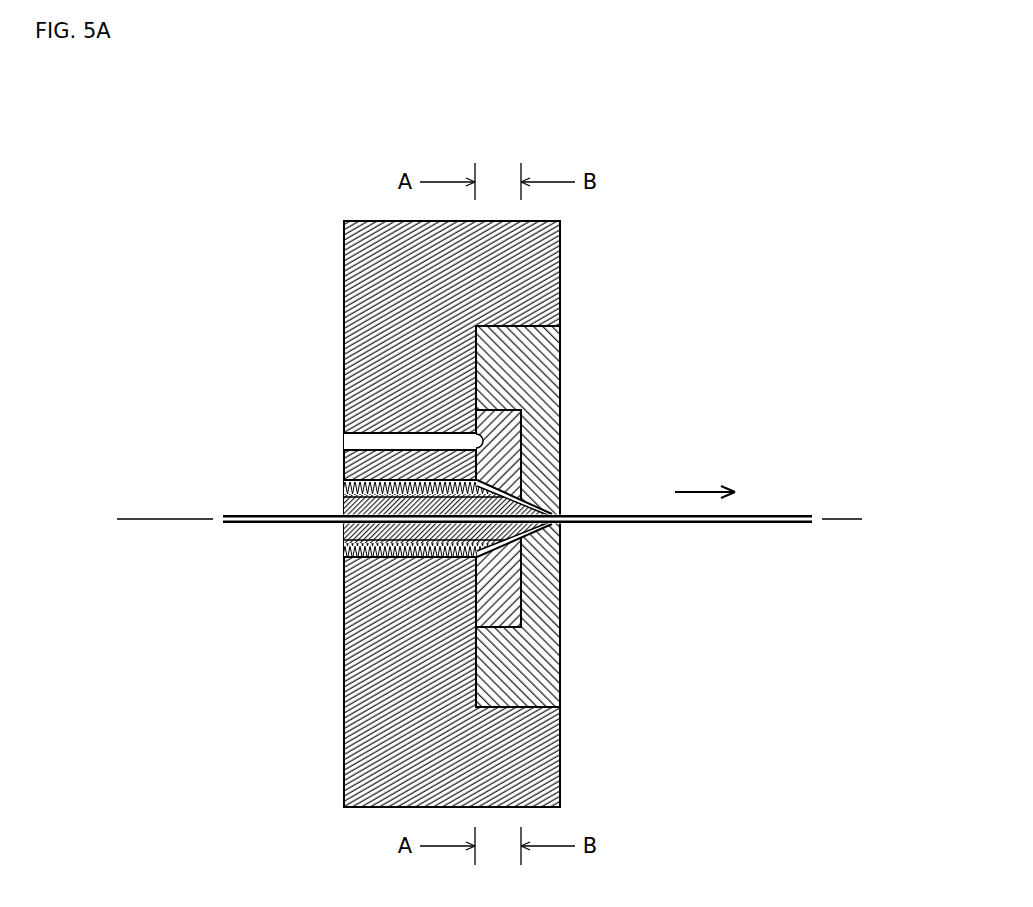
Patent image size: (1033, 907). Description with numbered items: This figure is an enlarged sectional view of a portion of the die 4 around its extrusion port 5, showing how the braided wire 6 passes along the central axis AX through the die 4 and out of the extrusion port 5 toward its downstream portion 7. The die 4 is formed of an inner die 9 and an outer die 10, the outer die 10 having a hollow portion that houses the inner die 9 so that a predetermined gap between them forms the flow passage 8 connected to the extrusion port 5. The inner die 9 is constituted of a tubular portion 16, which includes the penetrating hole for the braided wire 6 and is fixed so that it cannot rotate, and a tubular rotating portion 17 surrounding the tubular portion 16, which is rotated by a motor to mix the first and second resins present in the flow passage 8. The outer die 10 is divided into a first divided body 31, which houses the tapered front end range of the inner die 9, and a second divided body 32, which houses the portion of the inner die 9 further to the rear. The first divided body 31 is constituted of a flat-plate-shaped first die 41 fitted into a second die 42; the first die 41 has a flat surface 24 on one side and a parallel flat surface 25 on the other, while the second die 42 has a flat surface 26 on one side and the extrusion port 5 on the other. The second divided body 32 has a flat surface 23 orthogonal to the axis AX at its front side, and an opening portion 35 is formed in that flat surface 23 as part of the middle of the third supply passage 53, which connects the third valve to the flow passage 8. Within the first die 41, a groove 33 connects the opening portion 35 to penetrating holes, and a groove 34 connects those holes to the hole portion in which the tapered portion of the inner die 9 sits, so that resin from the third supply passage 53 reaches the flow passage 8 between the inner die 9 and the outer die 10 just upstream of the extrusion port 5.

The die 4 is at (305, 203).
The extrusion port 5 is at (565, 510).
The braided wire 6 is at (238, 515).
The second end portion of optical fiber 7 is at (783, 516).
The flow passage 8 is at (345, 556).
The inner die 9 is at (400, 536).
The outer die 10 is at (562, 292).
The tubular portion 16 is at (345, 502).
The rotating portion 17 is at (345, 483).
The flat surface 23 is at (466, 598).
The flat surface 24 is at (482, 615).
The flat surface 25 is at (518, 576).
The flat surface 26 is at (524, 592).
The first divided body 31 is at (668, 362).
The second divided body 32 is at (562, 758).
The groove 33 is at (522, 437).
The groove 34 is at (548, 483).
The opening portion 35 is at (476, 437).
The first die 41 is at (561, 415).
The second die 42 is at (561, 395).
The third supply passage 53 is at (345, 440).
The optical axis AX is at (152, 518).